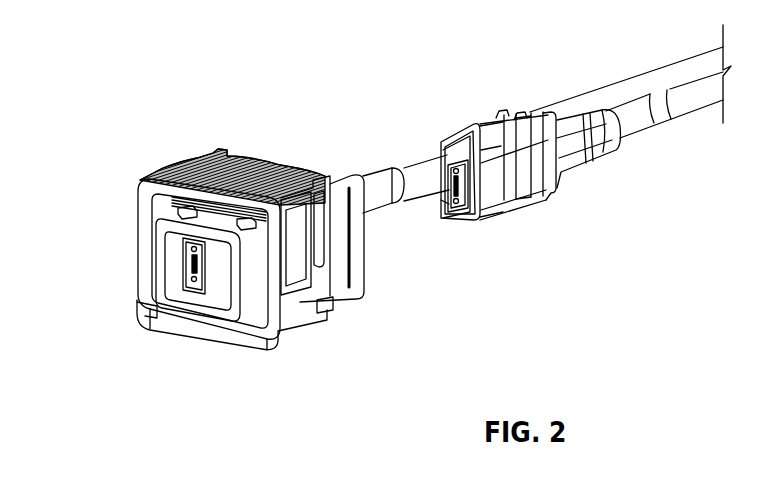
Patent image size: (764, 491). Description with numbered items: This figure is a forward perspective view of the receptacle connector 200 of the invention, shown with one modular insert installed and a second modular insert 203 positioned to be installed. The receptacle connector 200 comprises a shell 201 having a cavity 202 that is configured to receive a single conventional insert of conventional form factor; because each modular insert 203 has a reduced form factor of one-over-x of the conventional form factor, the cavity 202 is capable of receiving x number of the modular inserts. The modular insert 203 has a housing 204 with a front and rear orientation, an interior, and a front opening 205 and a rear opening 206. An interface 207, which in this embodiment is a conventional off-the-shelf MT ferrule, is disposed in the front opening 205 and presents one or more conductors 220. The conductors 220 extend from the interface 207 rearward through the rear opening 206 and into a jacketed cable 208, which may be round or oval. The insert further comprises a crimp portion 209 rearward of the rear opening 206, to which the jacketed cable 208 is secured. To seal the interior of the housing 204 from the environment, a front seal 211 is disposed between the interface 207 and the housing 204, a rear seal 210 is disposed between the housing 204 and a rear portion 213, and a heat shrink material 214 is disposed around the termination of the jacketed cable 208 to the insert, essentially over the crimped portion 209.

The receptacle connector 200 is at (526, 296).
The shell 201 is at (192, 316).
The cavity 202 is at (160, 275).
The modular insert 203 is at (457, 126).
The housing 204 is at (513, 203).
The front opening 205 is at (473, 222).
The rear opening 206 is at (533, 120).
The interface 207 is at (445, 196).
The jacketed cable 208 is at (670, 88).
The crimp portion 209 is at (591, 108).
The rear seal 210 is at (552, 175).
The front seal 211 is at (448, 157).
The rear portion 213 is at (549, 121).
The heat shrink material 214 is at (603, 147).
The conductors 220 is at (436, 199).